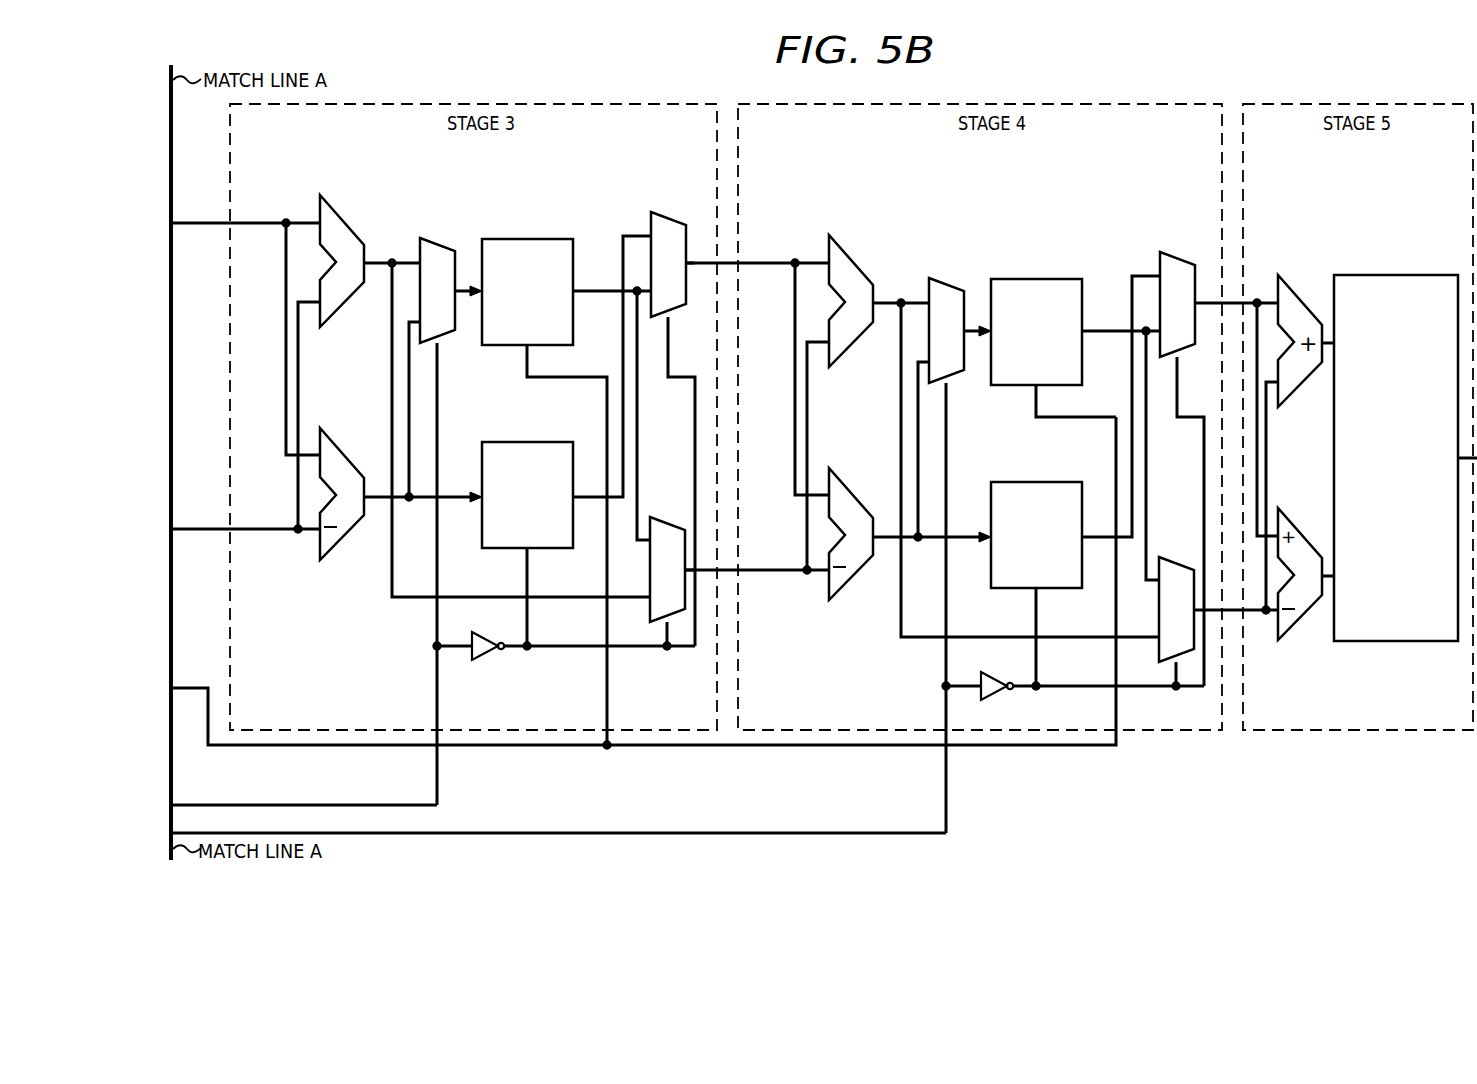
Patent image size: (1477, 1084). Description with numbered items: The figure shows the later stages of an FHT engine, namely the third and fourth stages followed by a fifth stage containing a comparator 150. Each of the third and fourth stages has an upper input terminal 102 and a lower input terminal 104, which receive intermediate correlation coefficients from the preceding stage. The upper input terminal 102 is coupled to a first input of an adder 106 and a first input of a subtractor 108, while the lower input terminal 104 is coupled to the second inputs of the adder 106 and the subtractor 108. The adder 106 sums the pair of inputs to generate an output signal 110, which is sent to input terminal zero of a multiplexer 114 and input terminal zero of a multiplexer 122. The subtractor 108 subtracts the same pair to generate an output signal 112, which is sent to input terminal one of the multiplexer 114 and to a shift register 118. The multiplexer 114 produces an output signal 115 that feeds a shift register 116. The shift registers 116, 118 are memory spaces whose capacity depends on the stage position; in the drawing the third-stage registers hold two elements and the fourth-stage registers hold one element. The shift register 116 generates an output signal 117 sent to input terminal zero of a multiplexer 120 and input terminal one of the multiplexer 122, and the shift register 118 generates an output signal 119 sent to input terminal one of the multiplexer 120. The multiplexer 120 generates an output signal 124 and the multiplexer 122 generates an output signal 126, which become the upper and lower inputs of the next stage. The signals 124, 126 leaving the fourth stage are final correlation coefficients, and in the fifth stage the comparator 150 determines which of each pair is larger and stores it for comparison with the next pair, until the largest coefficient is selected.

The upper input terminal 102 is at (248, 229).
The lower input terminal 104 is at (248, 534).
The adder 106 is at (339, 211).
The subtractor 108 is at (337, 441).
The output signal 110 is at (377, 255).
The output signal 112 is at (370, 503).
The multiplexer 114 is at (442, 237).
The output signal 115 is at (471, 281).
The shift register 116 is at (527, 236).
The output signal 117 is at (588, 288).
The shift register 118 is at (512, 442).
The output signal 119 is at (590, 490).
The multiplexer 120 is at (665, 216).
The multiplexer 122 is at (663, 517).
The output signal 124 is at (700, 268).
The output signal 126 is at (702, 577).
The comparator 150 is at (1389, 275).